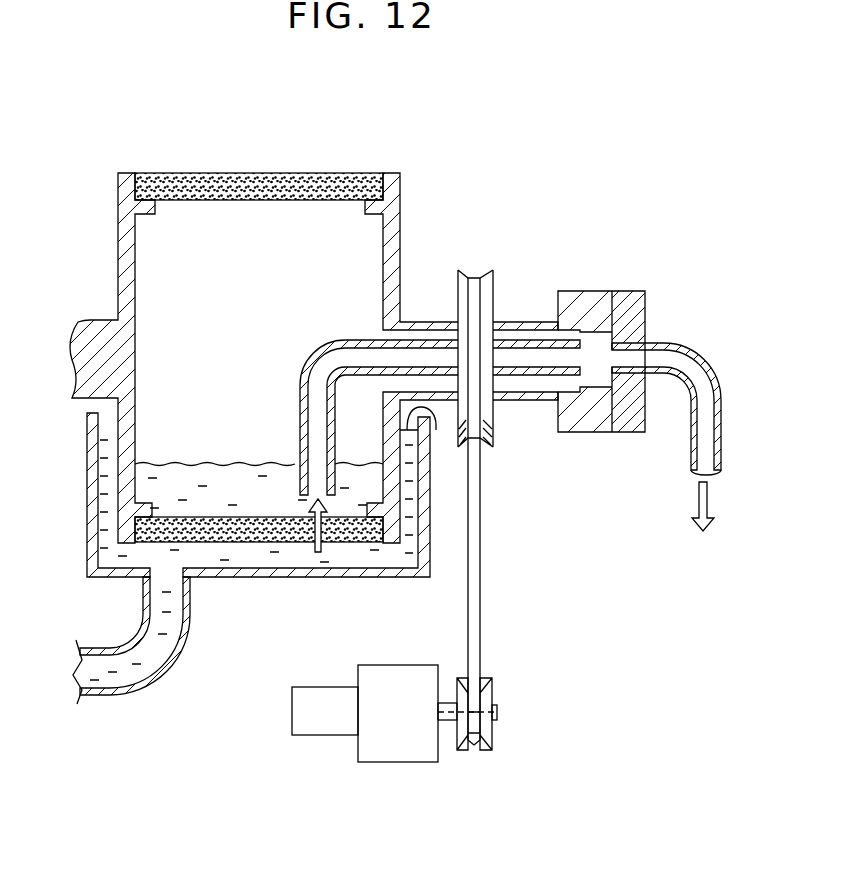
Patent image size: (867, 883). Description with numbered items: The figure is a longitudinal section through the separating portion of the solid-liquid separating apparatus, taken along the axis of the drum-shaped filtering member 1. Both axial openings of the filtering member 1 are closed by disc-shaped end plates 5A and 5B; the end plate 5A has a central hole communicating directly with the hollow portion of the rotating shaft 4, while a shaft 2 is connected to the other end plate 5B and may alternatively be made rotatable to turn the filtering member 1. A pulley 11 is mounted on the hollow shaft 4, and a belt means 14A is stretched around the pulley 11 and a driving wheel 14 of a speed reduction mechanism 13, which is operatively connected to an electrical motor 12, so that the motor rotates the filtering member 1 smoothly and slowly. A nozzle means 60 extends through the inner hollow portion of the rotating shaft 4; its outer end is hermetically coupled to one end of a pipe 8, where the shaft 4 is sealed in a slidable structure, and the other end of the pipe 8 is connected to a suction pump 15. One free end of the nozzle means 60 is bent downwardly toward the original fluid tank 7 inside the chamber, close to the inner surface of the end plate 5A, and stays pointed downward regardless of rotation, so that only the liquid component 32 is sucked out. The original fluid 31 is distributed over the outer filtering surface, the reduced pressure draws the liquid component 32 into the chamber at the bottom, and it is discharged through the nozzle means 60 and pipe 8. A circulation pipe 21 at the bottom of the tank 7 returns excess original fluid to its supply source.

The filtering member 1 is at (393, 595).
The shaft 2 is at (307, 332).
The rotating shaft 4 is at (535, 320).
The end plate 5A is at (396, 171).
The end plate 5B is at (124, 173).
The original fluid tank 7 is at (274, 572).
The pipe 8 is at (707, 358).
The pulley 11 is at (494, 277).
The electrical motor 12 is at (327, 735).
The speed reduction mechanism 13 is at (417, 762).
The driving wheel 14 is at (492, 740).
The belt means 14A is at (483, 618).
The suction pump 15 is at (697, 548).
The circulation pipe 21 is at (167, 660).
The original fluid 31 is at (436, 430).
The liquid component 32 is at (157, 462).
The nozzle means 60 is at (342, 340).